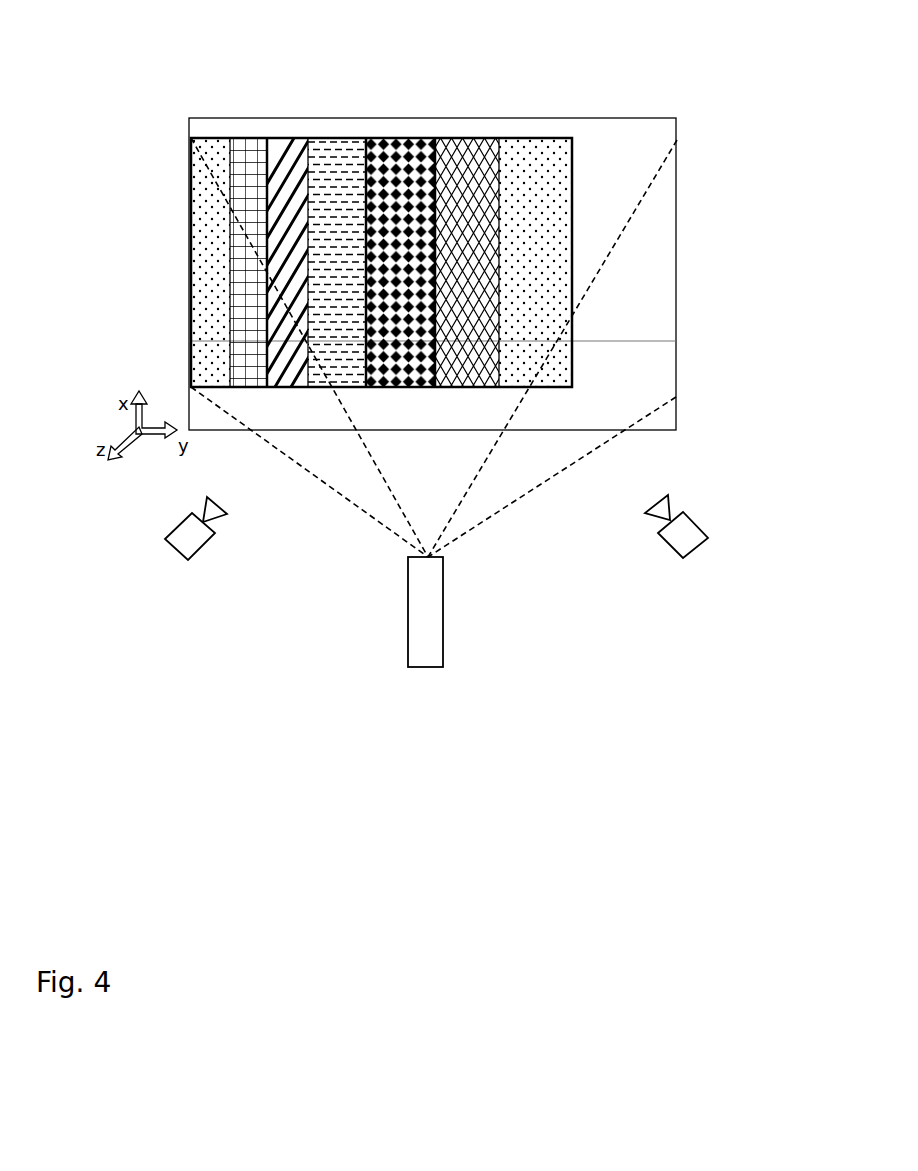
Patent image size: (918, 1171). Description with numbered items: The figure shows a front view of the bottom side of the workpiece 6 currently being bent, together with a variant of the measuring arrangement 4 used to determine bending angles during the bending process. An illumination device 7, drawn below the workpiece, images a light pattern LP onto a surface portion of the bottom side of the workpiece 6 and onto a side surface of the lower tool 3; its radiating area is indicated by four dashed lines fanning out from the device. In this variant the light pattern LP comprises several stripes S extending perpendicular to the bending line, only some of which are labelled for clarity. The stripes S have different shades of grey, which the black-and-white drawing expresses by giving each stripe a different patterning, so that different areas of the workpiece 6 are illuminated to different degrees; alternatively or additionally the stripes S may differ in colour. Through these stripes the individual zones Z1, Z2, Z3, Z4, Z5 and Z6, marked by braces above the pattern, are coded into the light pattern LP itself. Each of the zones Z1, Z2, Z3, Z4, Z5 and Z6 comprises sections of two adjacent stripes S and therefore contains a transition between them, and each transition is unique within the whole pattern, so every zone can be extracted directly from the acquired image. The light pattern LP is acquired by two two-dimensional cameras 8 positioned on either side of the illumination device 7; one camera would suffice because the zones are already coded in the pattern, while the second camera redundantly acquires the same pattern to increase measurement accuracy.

The lower tool 3 is at (684, 343).
The measuring arrangement 4 is at (740, 479).
The workpiece 6 is at (684, 118).
The illumination device 7 is at (427, 668).
The 2D cameras 8 is at (178, 551).
The light pattern LP is at (562, 177).
The stripes S is at (558, 233).
The zone Z1 is at (245, 125).
The zone Z2 is at (290, 125).
The zone Z3 is at (340, 125).
The zone Z4 is at (403, 125).
The zone Z5 is at (470, 125).
The zone Z6 is at (535, 125).